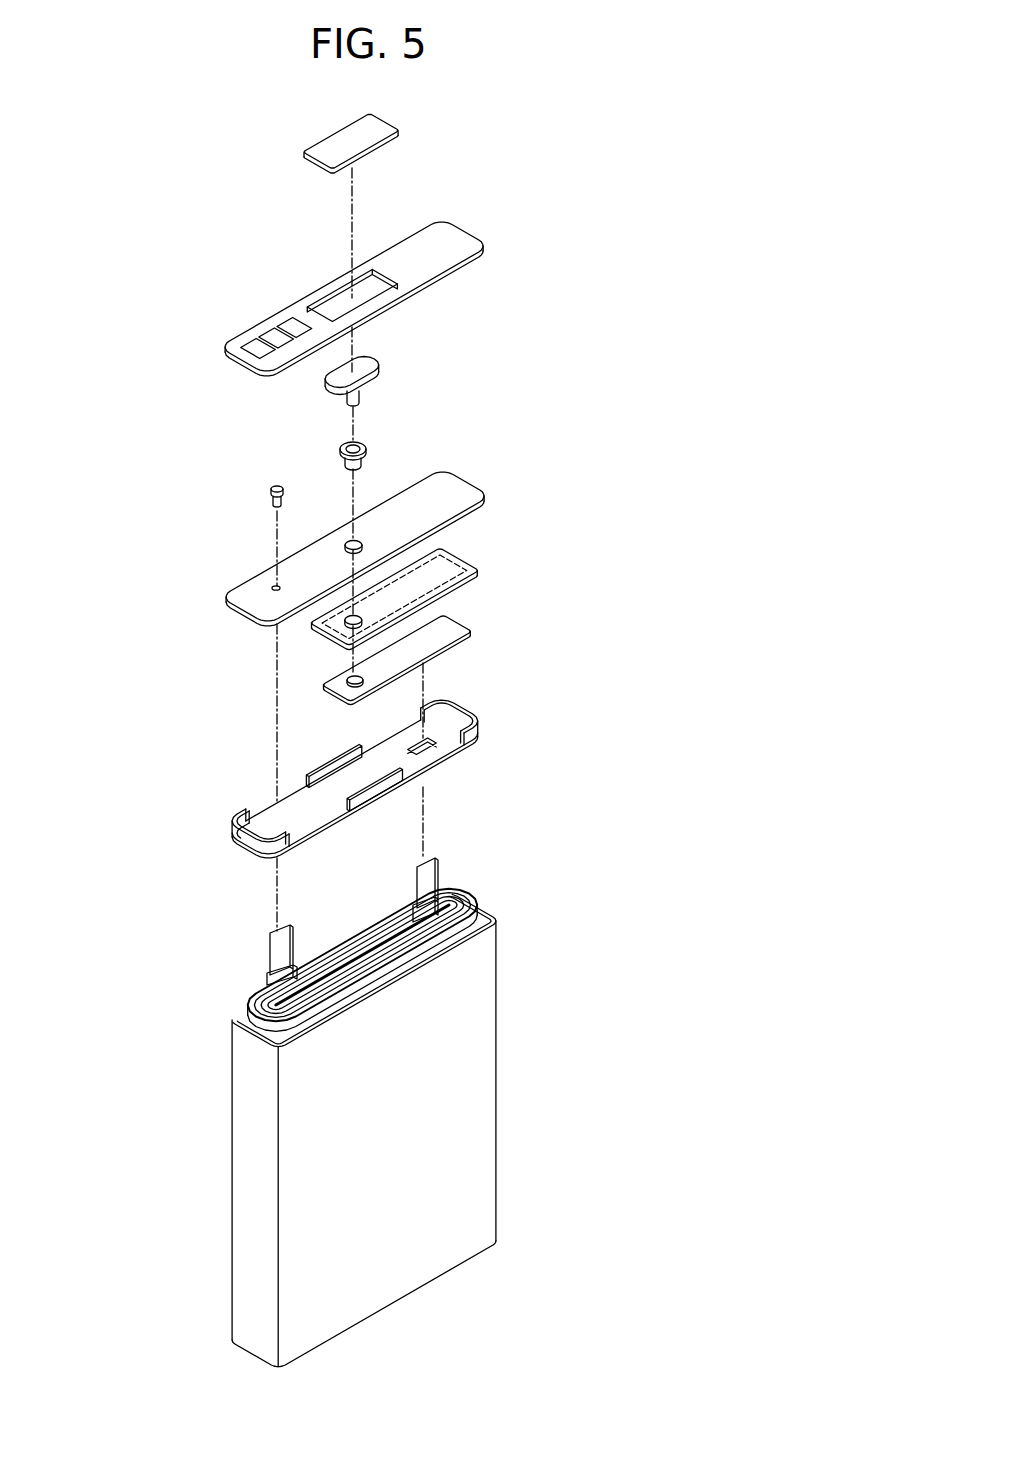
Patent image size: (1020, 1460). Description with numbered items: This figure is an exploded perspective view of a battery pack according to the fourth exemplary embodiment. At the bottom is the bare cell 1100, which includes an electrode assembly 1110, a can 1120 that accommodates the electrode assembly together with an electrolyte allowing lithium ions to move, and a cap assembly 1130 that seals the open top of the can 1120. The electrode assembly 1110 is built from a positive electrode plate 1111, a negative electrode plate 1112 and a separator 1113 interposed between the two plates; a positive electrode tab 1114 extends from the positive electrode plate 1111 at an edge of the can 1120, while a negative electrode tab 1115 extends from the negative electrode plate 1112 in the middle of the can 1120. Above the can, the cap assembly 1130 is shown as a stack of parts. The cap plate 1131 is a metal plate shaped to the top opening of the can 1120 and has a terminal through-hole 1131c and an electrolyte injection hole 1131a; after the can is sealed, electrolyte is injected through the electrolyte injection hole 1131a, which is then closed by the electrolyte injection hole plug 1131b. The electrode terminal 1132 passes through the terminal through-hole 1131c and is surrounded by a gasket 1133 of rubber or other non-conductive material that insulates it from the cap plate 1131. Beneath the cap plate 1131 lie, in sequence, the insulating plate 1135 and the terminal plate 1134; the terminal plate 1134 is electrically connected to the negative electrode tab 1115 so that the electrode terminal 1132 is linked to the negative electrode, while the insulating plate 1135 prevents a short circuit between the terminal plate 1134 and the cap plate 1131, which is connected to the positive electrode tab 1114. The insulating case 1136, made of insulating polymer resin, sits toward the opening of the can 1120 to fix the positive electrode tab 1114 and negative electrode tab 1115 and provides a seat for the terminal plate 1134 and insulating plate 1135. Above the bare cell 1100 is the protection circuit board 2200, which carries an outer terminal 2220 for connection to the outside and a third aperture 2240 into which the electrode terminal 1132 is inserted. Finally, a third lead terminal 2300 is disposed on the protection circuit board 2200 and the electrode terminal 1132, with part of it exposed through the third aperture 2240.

The third lead terminal 2300 is at (293, 171).
The protection circuit board 2200 is at (290, 291).
The outer terminal 2220 is at (293, 328).
The third aperture 2240 is at (322, 293).
The bare cell 1100 is at (707, 521).
The electrode assembly 1110 is at (556, 783).
The positive electrode plate 1111 is at (478, 905).
The negative electrode plate 1112 is at (462, 900).
The separator 1113 is at (473, 910).
The positive electrode tab 1114 is at (430, 865).
The negative electrode tab 1115 is at (288, 933).
The can 1120 is at (487, 1058).
The cap assembly 1130 is at (628, 366).
The cap plate 1131 is at (394, 535).
The electrolyte injection hole 1131a is at (273, 587).
The electrolyte injection hole plug 1131b is at (277, 486).
The terminal through-hole 1131c is at (359, 540).
The electrode terminal 1132 is at (368, 367).
The gasket 1133 is at (370, 447).
The terminal plate 1134 is at (455, 622).
The insulating plate 1135 is at (455, 557).
The insulating case 1136 is at (467, 711).